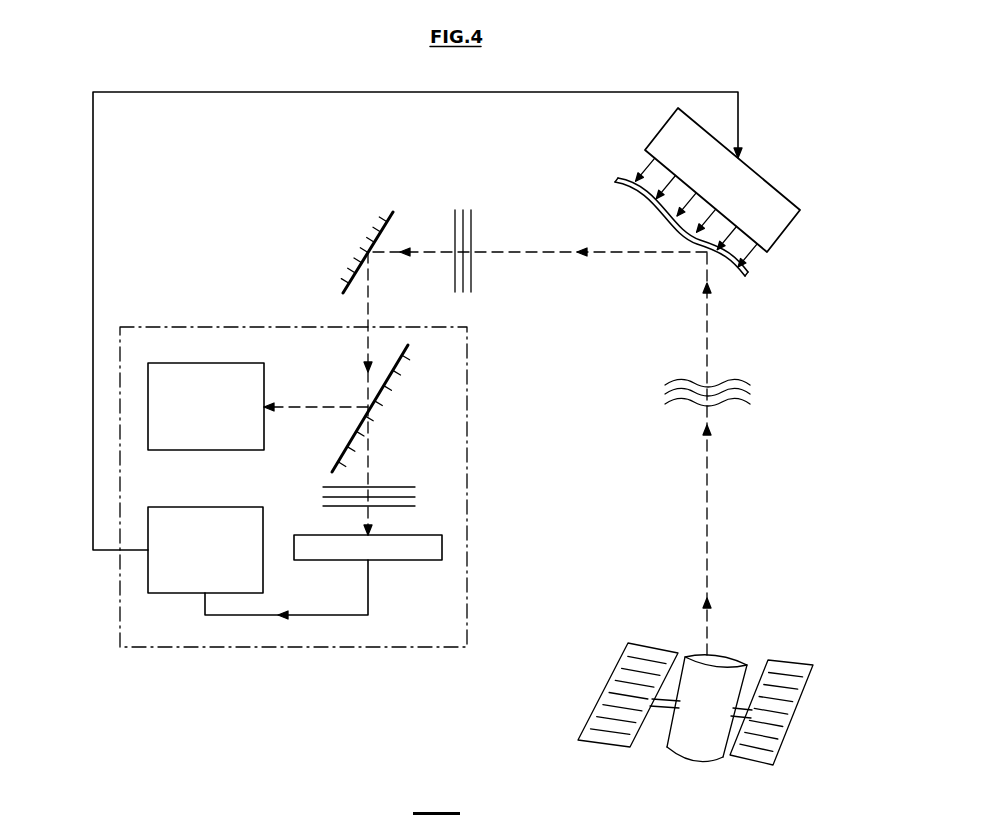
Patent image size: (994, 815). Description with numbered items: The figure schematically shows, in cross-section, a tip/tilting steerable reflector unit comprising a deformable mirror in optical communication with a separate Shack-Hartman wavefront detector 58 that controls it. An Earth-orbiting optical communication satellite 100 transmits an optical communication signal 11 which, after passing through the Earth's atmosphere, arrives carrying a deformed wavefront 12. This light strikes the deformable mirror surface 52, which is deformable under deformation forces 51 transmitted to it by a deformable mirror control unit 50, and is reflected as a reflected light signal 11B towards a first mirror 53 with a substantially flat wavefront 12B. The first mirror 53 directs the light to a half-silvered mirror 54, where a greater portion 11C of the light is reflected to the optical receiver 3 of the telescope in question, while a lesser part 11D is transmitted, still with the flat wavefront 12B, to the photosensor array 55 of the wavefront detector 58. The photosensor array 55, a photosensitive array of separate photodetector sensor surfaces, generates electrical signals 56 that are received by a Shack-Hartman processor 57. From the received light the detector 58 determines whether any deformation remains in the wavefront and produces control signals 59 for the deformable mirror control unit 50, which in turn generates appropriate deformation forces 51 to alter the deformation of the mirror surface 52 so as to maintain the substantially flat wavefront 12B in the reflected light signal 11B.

The optical receiver 3 is at (212, 418).
The optical communication signal 11 is at (707, 492).
The reflected light signal 11B is at (380, 292).
The greater portion of the light 11C is at (319, 403).
The lesser part of the light 11D is at (378, 446).
The deformed wavefront 12 is at (727, 385).
The substantially flat wavefront 12B is at (473, 287).
The deformable mirror control unit 50 is at (784, 197).
The deformation forces 51 is at (723, 218).
The deformable mirror surface 52 is at (742, 274).
The first mirror 53 is at (340, 270).
The half-silvered mirror 54 is at (408, 345).
The photosensor array 55 is at (403, 560).
The electrical signals 56 is at (320, 616).
The Shack-Hartman processor 57 is at (243, 507).
The Shack-Hartman wavefront detector 58 is at (155, 328).
The control signals 59 is at (302, 91).
The Earth-orbiting optical communication satellite 100 is at (722, 775).